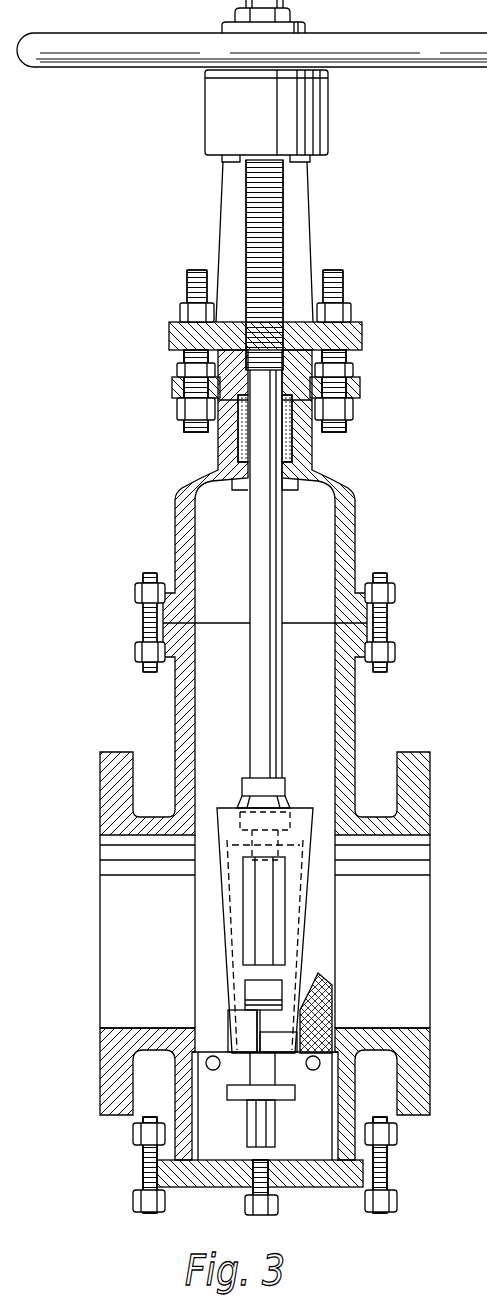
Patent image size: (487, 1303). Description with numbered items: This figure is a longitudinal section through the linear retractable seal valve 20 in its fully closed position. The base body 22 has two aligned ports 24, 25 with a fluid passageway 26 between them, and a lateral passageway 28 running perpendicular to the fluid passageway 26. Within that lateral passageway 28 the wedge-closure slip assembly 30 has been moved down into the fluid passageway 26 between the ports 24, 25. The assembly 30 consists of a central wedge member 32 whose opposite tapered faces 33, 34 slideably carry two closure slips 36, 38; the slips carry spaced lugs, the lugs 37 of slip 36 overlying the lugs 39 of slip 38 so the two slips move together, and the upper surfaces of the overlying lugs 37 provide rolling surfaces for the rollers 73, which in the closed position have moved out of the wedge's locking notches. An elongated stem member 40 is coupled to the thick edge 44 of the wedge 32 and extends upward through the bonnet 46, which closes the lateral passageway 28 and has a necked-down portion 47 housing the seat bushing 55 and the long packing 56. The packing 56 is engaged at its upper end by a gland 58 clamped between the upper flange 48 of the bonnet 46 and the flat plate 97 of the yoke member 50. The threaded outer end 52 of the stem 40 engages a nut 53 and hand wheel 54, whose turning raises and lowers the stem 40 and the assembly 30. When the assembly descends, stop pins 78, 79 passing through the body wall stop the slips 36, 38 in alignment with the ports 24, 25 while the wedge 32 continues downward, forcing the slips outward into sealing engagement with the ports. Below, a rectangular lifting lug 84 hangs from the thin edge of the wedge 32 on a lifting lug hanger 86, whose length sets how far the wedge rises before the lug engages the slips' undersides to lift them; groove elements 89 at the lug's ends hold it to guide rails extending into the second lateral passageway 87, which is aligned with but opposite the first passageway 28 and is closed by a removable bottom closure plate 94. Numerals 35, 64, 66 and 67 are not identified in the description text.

The linear retractable seal valve 20 is at (368, 566).
The base body 22 is at (178, 722).
The port 24 is at (100, 958).
The port 25 is at (415, 908).
The fluid passageway 26 is at (478, 748).
The lateral passageway 28 is at (200, 690).
The wedge-closure slip assembly 30 is at (228, 938).
The central wedge member 32 is at (274, 820).
The tapered face 33 is at (225, 920).
The tapered face 34 is at (305, 920).
The seat 35 is at (480, 867).
The closure slip 36 is at (206, 985).
The lug 37 is at (263, 1007).
The closure slip 38 is at (320, 960).
The lug 39 is at (270, 1052).
The elongated stem member 40 is at (270, 594).
The thick edge 44 is at (262, 805).
The bonnet 46 is at (355, 533).
The necked-down portion 47 is at (312, 443).
The upper flange 48 is at (360, 387).
The yoke member 50 is at (306, 250).
The outer end 52 is at (246, 192).
The nut 53 is at (300, 28).
The hand wheel 54 is at (252, 68).
The seat bushing 55 is at (292, 490).
The long packing 56 is at (236, 432).
The gland 58 is at (218, 353).
The seat 64 is at (476, 978).
The seat face 66 is at (480, 890).
The gate slot 67 is at (272, 884).
The roller 73 is at (250, 1031).
The stop pin 78 is at (486, 1068).
The stop pin 79 is at (207, 1066).
The lifting lug 84 is at (285, 1098).
The lifting lug hanger 86 is at (282, 1066).
The second lateral passageway 87 is at (208, 1178).
The groove element 89 is at (252, 1124).
The bottom closure plate 94 is at (312, 1180).
The flat plate 97 is at (364, 338).